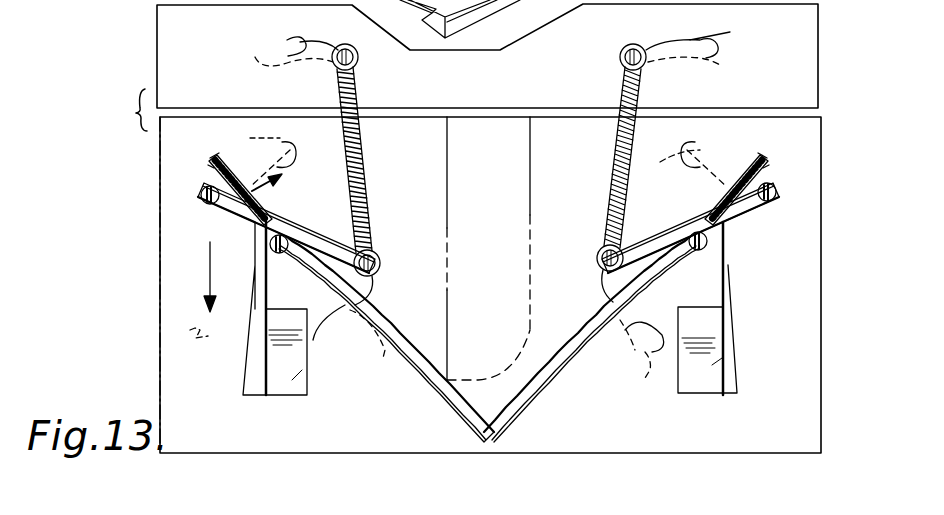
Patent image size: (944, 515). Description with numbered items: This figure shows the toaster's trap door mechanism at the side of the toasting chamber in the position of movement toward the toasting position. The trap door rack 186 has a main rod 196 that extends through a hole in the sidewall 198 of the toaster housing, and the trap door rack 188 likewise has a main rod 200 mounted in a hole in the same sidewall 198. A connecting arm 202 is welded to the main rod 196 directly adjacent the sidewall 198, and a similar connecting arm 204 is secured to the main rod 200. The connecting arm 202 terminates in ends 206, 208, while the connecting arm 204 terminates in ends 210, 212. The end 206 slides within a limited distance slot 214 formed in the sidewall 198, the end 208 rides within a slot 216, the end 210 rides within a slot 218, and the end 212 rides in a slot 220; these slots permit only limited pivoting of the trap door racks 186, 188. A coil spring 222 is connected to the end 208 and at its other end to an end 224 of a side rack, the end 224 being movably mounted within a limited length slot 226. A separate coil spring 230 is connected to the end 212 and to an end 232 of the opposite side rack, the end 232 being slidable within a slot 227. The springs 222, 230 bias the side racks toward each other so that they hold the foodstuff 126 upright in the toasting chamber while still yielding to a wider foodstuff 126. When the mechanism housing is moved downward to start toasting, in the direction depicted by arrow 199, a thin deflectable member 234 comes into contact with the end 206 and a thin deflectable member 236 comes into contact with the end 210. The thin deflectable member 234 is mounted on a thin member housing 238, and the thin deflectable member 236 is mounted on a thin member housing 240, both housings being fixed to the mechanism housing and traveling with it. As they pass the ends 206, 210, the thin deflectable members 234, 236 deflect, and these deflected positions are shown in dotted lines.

The foodstuff 126 is at (520, 165).
The trap door rack 186 is at (602, 303).
The trap door rack 188 is at (375, 307).
The main rod 196 is at (724, 245).
The sidewall 198 is at (185, 331).
The arrow 199 is at (207, 273).
The main rod 200 is at (275, 182).
The connecting arm 202 is at (695, 208).
The connecting arm 204 is at (295, 222).
The end 206 is at (758, 205).
The end 208 is at (603, 252).
The end 210 is at (200, 196).
The end 212 is at (380, 262).
The limited distance slot 214 is at (690, 165).
The slot 216 is at (650, 358).
The slot 218 is at (253, 157).
The slot 220 is at (383, 356).
The coil spring 222 is at (615, 196).
The end 224 is at (620, 57).
The limited length slot 226 is at (731, 32).
The slot 227 is at (285, 40).
The coil spring 230 is at (357, 150).
The end 232 is at (358, 60).
The thin deflectable member 234 is at (783, 137).
The thin deflectable member 236 is at (206, 170).
The thin member housing 238 is at (726, 348).
The thin member housing 240 is at (268, 356).